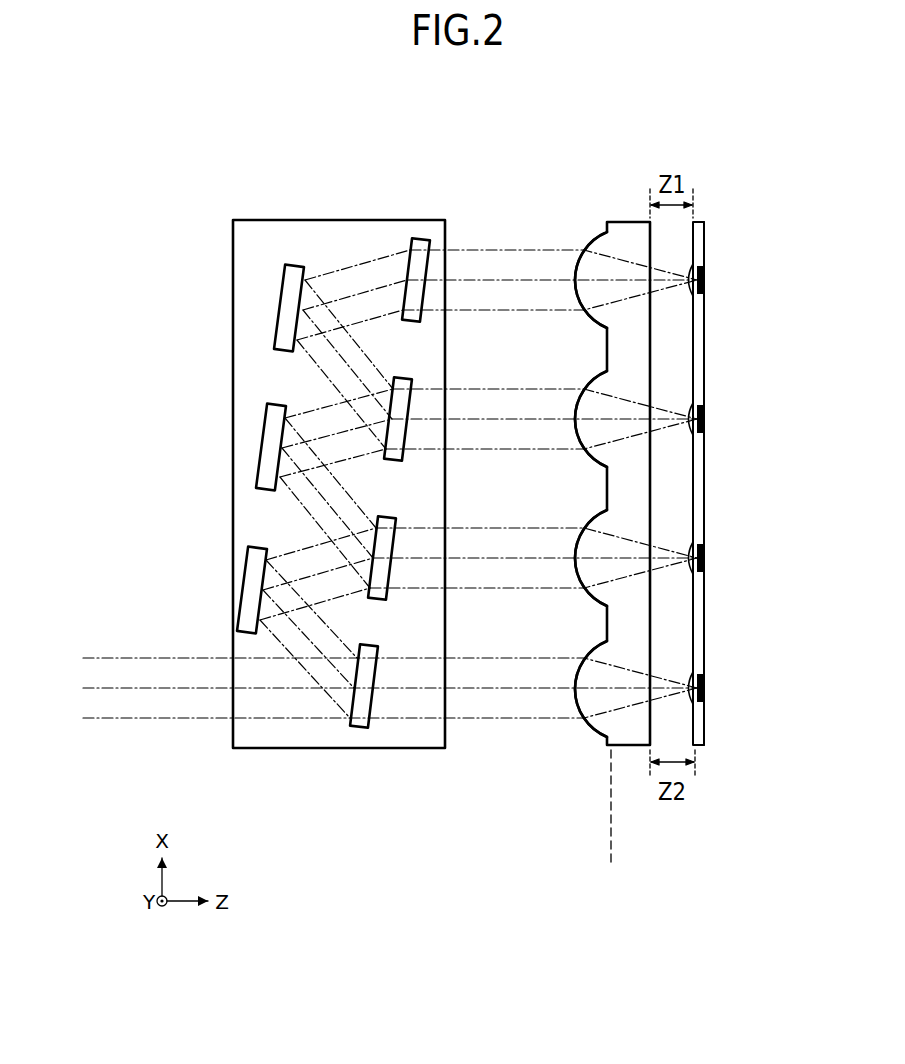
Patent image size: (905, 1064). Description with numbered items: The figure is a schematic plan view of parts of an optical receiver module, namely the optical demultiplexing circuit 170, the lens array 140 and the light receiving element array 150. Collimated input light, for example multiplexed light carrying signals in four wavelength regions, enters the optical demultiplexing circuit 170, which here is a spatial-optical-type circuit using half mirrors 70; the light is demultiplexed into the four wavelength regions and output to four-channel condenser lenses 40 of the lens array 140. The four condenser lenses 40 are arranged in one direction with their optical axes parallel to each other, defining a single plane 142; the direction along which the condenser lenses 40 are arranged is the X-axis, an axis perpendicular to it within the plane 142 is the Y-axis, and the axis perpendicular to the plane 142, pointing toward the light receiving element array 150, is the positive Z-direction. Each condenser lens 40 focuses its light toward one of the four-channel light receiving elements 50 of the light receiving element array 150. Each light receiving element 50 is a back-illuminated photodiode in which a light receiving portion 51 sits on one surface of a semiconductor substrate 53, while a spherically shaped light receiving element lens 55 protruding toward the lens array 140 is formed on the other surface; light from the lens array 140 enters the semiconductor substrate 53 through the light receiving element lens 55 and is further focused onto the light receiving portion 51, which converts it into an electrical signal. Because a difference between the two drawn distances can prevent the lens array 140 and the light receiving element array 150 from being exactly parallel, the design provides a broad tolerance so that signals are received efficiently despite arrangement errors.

The optical demultiplexing circuit 170 is at (329, 220).
The half mirror 70 is at (252, 572).
The condenser lens 40 is at (567, 240).
The lens array 140 is at (625, 222).
The plane 142 is at (610, 815).
The light receiving element array 150 is at (698, 221).
The light receiving element 50 is at (718, 261).
The light receiving portion 51 is at (704, 279).
The light receiving element lens 55 is at (689, 297).
The semiconductor substrate 53 is at (706, 736).